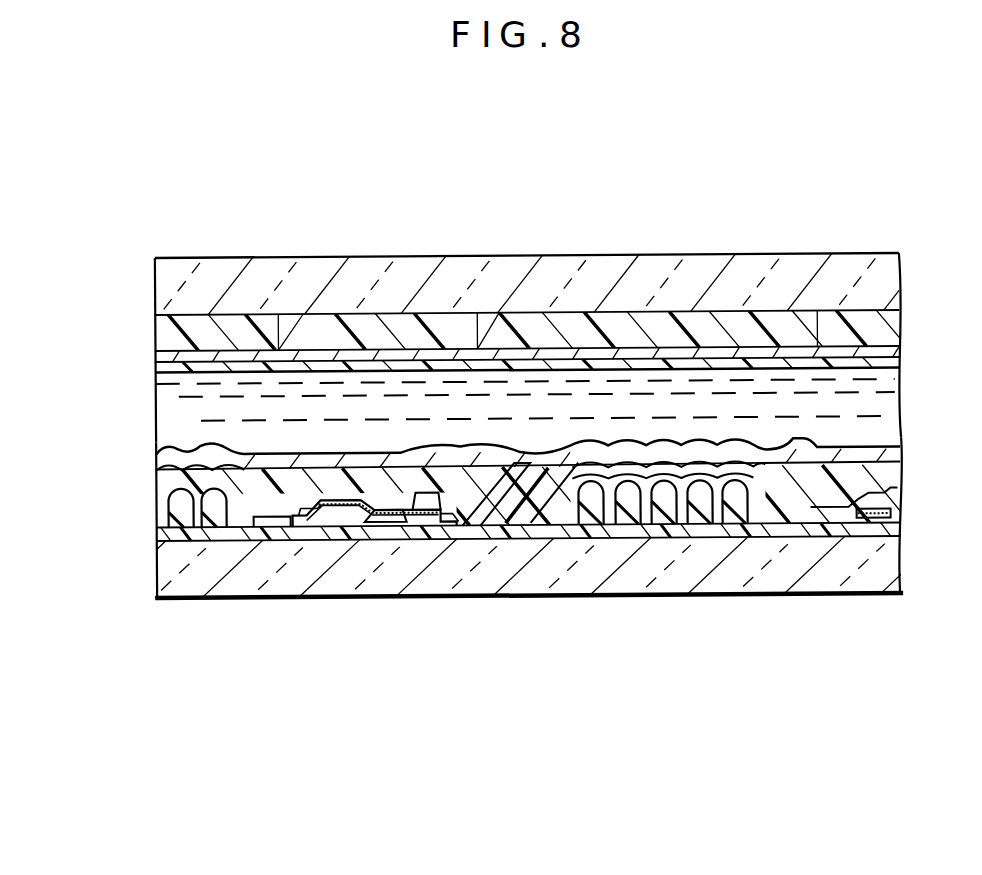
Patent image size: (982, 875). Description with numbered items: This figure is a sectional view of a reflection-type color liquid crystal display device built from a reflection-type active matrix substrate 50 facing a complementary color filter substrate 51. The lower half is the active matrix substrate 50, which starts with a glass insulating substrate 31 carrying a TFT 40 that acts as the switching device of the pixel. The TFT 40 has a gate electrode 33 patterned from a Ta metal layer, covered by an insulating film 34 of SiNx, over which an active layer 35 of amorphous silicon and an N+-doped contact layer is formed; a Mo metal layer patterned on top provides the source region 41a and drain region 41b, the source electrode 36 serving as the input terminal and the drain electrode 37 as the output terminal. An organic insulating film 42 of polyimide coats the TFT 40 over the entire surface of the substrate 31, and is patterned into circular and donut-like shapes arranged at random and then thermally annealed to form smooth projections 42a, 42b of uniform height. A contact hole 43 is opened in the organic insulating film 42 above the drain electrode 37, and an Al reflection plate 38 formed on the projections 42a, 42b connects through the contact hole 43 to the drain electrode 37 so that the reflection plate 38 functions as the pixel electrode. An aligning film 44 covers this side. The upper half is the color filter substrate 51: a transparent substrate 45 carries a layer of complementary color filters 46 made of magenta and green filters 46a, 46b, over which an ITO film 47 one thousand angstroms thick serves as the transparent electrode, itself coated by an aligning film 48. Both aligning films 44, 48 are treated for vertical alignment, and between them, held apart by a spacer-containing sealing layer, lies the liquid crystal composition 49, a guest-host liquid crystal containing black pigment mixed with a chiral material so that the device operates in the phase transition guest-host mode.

The glass insulating substrate 31 is at (213, 598).
The gate electrode 33 is at (386, 518).
The insulating film 34 is at (332, 506).
The active layer 35 is at (402, 507).
The source electrode 36 is at (266, 530).
The drain electrode 37 is at (452, 521).
The reflection plate 38 is at (862, 524).
The TFT 40 is at (592, 675).
The source region 41a is at (306, 518).
The drain region 41b is at (432, 500).
The organic insulating film 42 is at (165, 485).
The projection 42a is at (656, 527).
The projection 42b is at (776, 468).
The contact hole 43 is at (520, 512).
The aligning film 44 is at (160, 452).
The substrate 45 is at (226, 257).
The complementary color filters 46 is at (862, 182).
The complementary color filter 46a is at (330, 318).
The complementary color filter 46b is at (484, 320).
The ITO film 47 is at (158, 357).
The aligning film 48 is at (158, 366).
The liquid crystal composition 49 is at (160, 413).
The active matrix substrate 50 is at (72, 447).
The complementary color filter substrate 51 is at (72, 265).